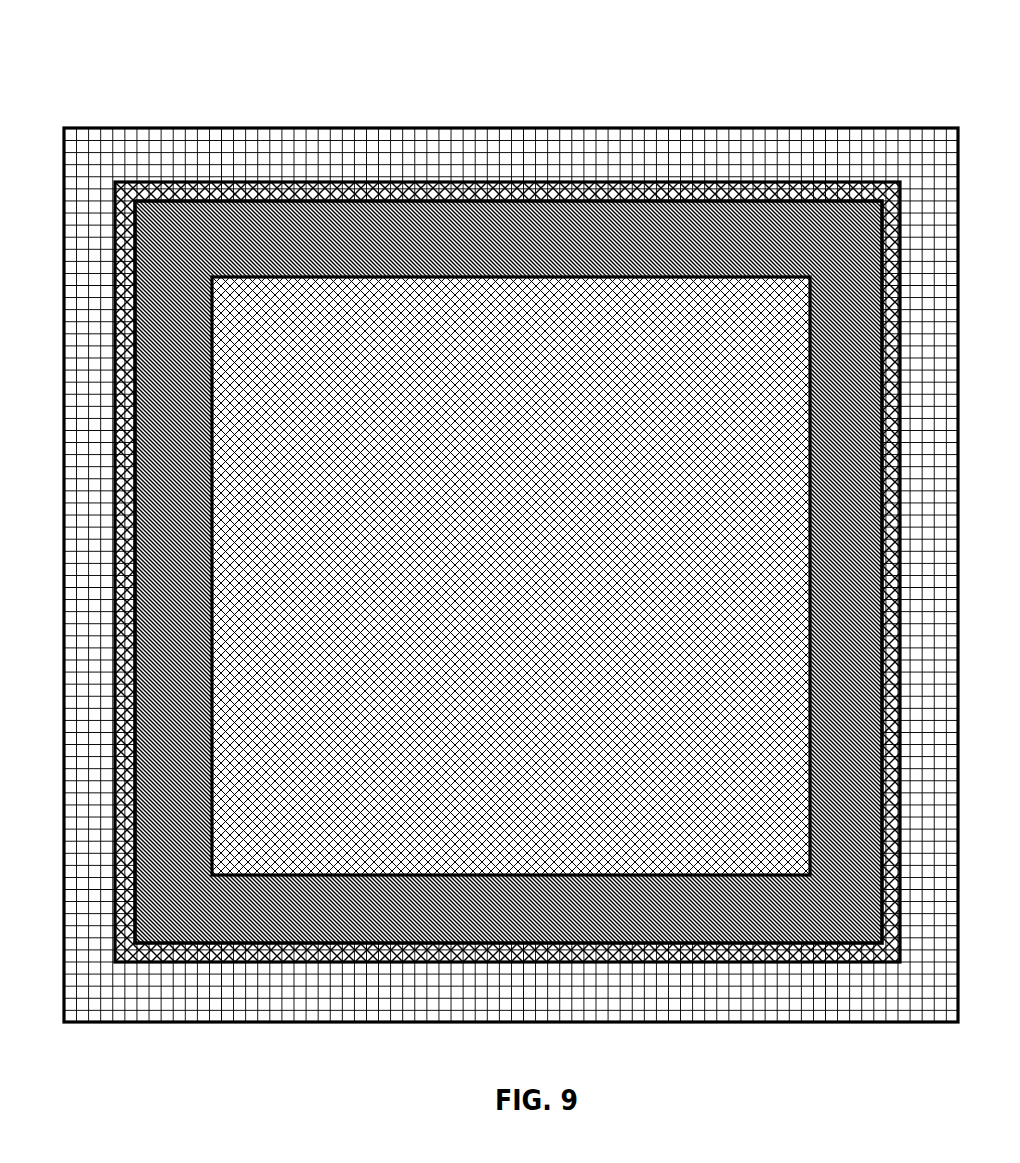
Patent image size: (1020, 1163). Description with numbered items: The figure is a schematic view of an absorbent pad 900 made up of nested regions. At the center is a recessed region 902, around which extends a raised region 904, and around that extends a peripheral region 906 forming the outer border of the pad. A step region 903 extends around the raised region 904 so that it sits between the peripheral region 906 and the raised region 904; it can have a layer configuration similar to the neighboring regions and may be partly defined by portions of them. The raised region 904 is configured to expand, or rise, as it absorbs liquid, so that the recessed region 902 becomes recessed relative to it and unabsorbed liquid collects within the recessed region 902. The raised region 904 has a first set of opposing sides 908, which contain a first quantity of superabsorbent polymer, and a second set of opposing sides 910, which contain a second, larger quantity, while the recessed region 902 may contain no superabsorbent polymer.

The absorbent pad 900 is at (108, 48).
The recessed region 902 is at (537, 302).
The step region 903 is at (760, 195).
The raised region 904 is at (508, 515).
The peripheral region 906 is at (332, 137).
The first set of opposing sides 908 is at (192, 572).
The second set of opposing sides 910 is at (528, 246).